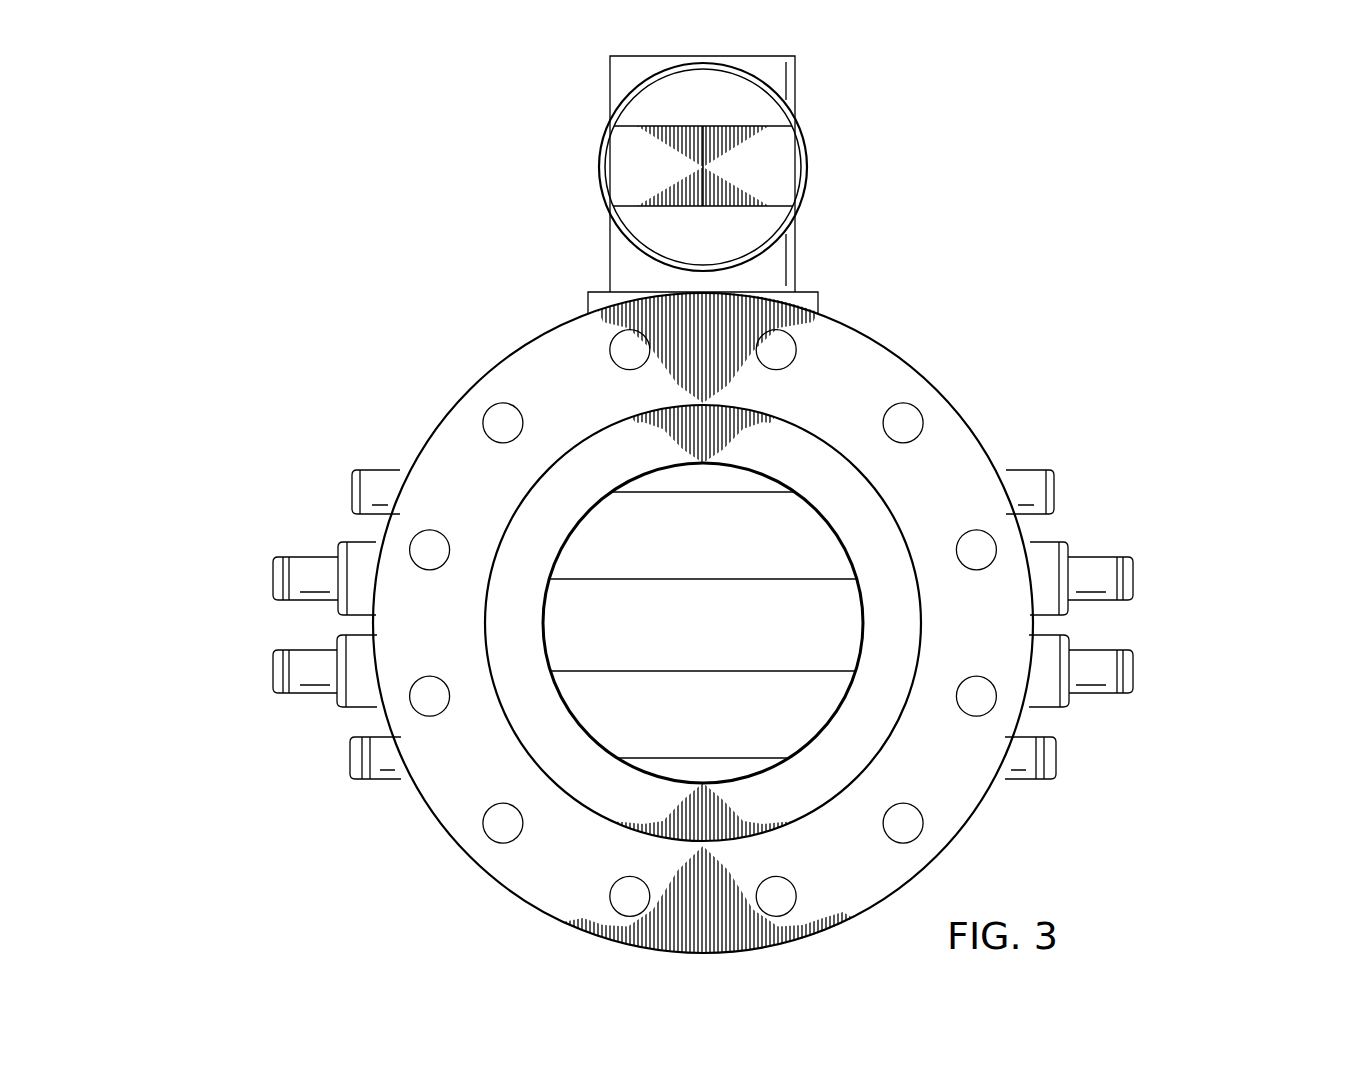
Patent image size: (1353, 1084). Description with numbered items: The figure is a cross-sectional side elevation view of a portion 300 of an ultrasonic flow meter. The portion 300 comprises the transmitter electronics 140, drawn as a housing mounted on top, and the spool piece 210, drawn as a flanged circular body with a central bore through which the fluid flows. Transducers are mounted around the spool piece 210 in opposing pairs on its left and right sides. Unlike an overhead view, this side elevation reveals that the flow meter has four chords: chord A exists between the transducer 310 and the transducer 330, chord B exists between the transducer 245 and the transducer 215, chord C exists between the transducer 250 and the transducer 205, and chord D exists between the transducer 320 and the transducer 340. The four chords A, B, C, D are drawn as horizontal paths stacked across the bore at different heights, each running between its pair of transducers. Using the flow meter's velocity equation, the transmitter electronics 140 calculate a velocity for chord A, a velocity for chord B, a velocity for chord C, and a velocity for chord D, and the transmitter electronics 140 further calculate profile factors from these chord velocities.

The portion 300 is at (921, 127).
The spool piece 210 is at (483, 368).
The transmitter electronics 140 is at (601, 165).
The transducer 310 is at (354, 492).
The transducer 245 is at (272, 580).
The transducer 250 is at (272, 668).
The transducer 320 is at (350, 759).
The transducer 330 is at (1079, 478).
The transducer 215 is at (1163, 568).
The transducer 205 is at (1134, 668).
The transducer 340 is at (1056, 759).
The chord A is at (716, 493).
The chord B is at (690, 580).
The chord C is at (716, 673).
The chord D is at (690, 756).